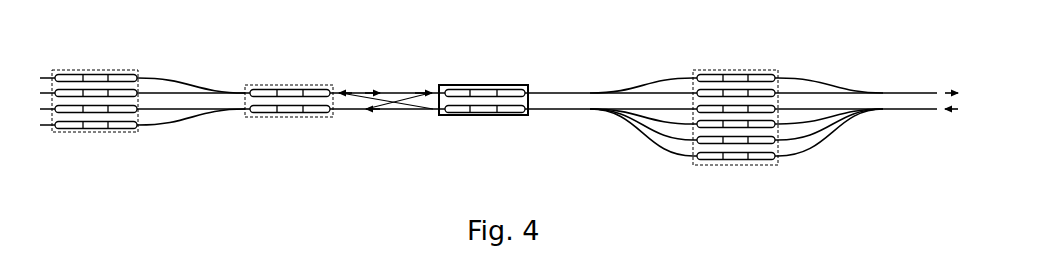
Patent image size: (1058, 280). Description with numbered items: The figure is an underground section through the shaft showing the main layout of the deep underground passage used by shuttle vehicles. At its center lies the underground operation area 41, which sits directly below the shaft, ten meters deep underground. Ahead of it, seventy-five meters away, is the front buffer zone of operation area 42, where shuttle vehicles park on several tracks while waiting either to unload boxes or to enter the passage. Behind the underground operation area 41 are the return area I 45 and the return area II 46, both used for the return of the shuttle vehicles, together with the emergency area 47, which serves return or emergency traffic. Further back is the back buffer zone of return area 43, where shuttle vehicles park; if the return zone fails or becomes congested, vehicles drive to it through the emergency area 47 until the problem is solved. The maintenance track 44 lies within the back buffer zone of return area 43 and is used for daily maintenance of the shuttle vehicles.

The underground operation area 41 is at (505, 117).
The front buffer zone of operation area 42 is at (778, 166).
The back buffer zone of return area 43 is at (111, 120).
The maintenance track 44 is at (49, 74).
The return area I 45 is at (295, 101).
The return area II 46 is at (317, 117).
The emergency area 47 is at (105, 129).